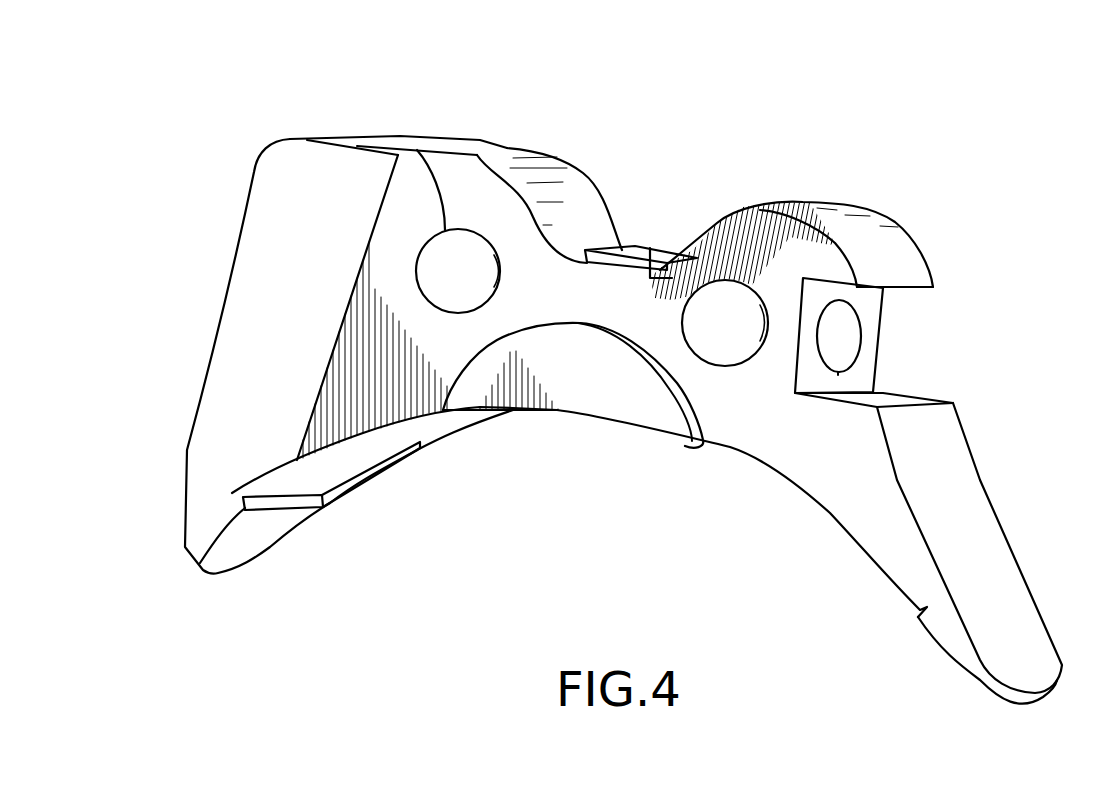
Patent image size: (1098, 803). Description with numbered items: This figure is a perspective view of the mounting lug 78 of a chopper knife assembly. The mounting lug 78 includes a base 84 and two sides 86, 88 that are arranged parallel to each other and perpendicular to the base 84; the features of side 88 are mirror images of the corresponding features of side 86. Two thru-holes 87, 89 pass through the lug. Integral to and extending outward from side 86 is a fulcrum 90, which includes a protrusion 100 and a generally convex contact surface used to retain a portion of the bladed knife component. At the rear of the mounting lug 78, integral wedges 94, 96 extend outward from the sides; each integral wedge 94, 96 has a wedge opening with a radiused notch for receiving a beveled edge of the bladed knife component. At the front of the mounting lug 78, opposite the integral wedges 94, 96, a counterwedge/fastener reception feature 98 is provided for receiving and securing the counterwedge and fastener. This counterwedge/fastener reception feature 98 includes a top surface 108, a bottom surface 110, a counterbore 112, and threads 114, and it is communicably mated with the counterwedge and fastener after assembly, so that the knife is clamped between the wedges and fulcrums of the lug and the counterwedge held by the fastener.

The mounting lug 78 is at (976, 154).
The base 84 is at (348, 462).
The side 86 is at (484, 186).
The thru-hole 87 is at (750, 287).
The side 88 is at (583, 171).
The thru-hole 89 is at (467, 228).
The fulcrum 90 is at (683, 433).
The integral wedge 94 is at (343, 143).
The integral wedge 96 is at (438, 142).
The counterwedge/fastener reception feature 98 is at (876, 367).
The protrusion 100 is at (640, 407).
The top surface 108 is at (923, 290).
The bottom surface 110 is at (913, 397).
The counterbore 112 is at (862, 332).
The threads 114 is at (838, 372).